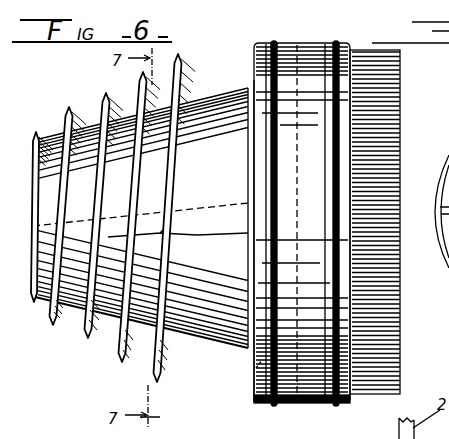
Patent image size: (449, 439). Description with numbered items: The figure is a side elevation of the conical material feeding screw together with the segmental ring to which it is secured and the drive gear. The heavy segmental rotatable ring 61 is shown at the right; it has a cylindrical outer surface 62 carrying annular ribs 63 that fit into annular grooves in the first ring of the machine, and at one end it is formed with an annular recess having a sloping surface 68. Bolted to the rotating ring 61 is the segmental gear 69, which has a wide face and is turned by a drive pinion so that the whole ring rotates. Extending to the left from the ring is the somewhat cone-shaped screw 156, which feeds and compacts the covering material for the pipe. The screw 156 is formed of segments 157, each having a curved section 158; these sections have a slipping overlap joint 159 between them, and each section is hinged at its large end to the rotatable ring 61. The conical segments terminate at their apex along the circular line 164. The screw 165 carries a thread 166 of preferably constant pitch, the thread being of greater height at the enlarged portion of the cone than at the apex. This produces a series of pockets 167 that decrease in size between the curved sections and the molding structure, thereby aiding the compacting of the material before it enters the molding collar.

The segmental rotatable ring 61 is at (254, 78).
The cylindrical outer surface 62 is at (302, 400).
The annular ribs 63 is at (273, 405).
The sloping surface 68 is at (256, 368).
The segmental gear 69 is at (400, 100).
The cone-shaped screw 156 is at (107, 367).
The segments 157 is at (68, 315).
The curved section 158 is at (222, 342).
The slipping overlap joint 159 is at (200, 233).
The circular line 164 is at (36, 136).
The screw 165 is at (212, 58).
The thread 166 is at (188, 92).
The pockets 167 is at (90, 118).